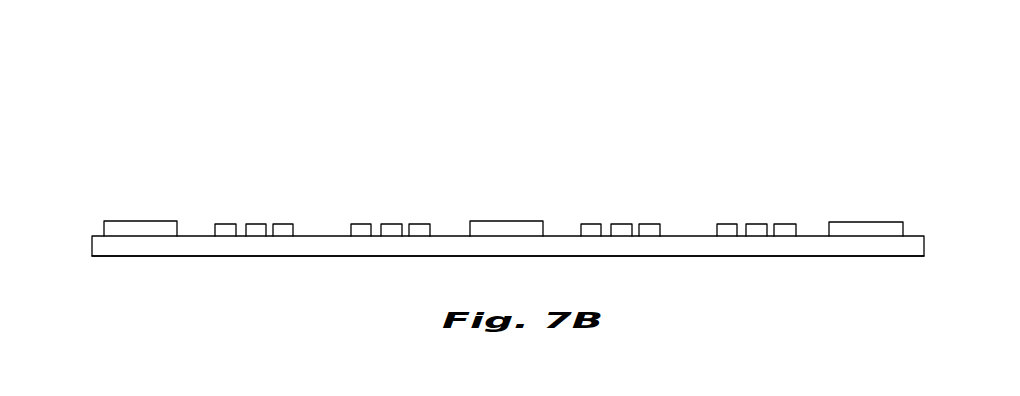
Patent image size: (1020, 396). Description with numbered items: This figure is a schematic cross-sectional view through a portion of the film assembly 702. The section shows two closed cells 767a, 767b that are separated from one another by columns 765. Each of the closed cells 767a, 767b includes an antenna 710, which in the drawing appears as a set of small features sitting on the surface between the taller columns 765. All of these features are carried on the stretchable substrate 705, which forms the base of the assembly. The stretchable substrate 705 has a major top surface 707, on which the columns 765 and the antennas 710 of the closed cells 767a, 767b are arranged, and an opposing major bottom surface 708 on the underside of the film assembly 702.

The film assembly 702 is at (112, 89).
The stretchable substrate 705 is at (887, 247).
The major top surface 707 is at (195, 236).
The major bottom surface 708 is at (320, 256).
The columns 765 is at (502, 229).
The closed cell 767a is at (347, 193).
The closed cell 767b is at (735, 193).
The antenna 710 is at (725, 232).